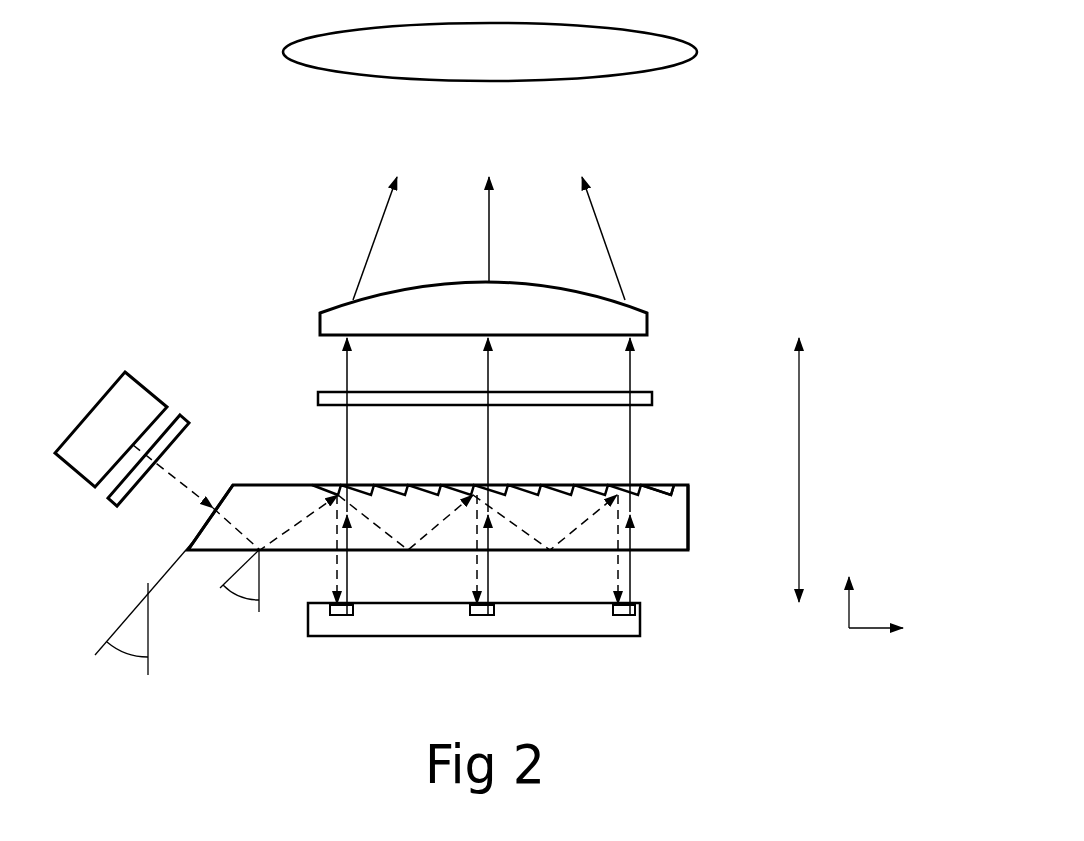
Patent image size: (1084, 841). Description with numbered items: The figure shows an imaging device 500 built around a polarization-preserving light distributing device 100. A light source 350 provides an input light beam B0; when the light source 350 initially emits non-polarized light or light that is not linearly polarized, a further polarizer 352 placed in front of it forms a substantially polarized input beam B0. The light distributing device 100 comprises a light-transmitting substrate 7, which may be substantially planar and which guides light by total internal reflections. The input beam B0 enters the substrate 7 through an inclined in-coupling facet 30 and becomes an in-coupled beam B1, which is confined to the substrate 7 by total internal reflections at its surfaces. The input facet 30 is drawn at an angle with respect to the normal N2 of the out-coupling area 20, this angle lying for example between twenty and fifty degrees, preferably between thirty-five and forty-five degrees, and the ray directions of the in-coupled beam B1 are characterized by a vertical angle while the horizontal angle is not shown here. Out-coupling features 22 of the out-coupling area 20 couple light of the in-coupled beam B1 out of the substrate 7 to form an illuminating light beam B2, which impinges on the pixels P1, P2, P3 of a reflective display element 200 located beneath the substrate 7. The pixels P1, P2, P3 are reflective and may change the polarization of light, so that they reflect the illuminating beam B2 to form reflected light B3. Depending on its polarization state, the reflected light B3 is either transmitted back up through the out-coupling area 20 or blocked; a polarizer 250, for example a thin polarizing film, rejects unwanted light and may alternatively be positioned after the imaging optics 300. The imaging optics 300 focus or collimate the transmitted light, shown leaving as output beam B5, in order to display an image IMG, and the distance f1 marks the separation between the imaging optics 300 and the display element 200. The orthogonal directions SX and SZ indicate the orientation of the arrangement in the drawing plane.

The imaging device 500 is at (762, 240).
The image IMG is at (697, 52).
The output light beam B5 is at (489, 238).
The imaging optics 300 is at (647, 322).
The polarizer 250 is at (318, 400).
The reflected light B3 is at (490, 447).
The illuminating light beam B2 is at (477, 563).
The light distributing device 100 is at (473, 511).
The light-transmitting substrate 7 is at (688, 527).
The in-coupling facet 30 is at (195, 552).
The out-coupling area 20 is at (656, 478).
The out-coupling features 22 is at (654, 480).
The light source 350 is at (73, 468).
The further polarizer 352 is at (114, 504).
The input light beam B0 is at (176, 476).
The in-coupled beam B1 is at (415, 520).
The normal of the out-coupling area N2 is at (143, 631).
The reflective display element 200 is at (524, 654).
The pixel P1 is at (337, 637).
The pixel P2 is at (478, 637).
The pixel P3 is at (618, 637).
The distance f1 is at (818, 470).
The direction SZ is at (850, 584).
The direction SX is at (897, 630).